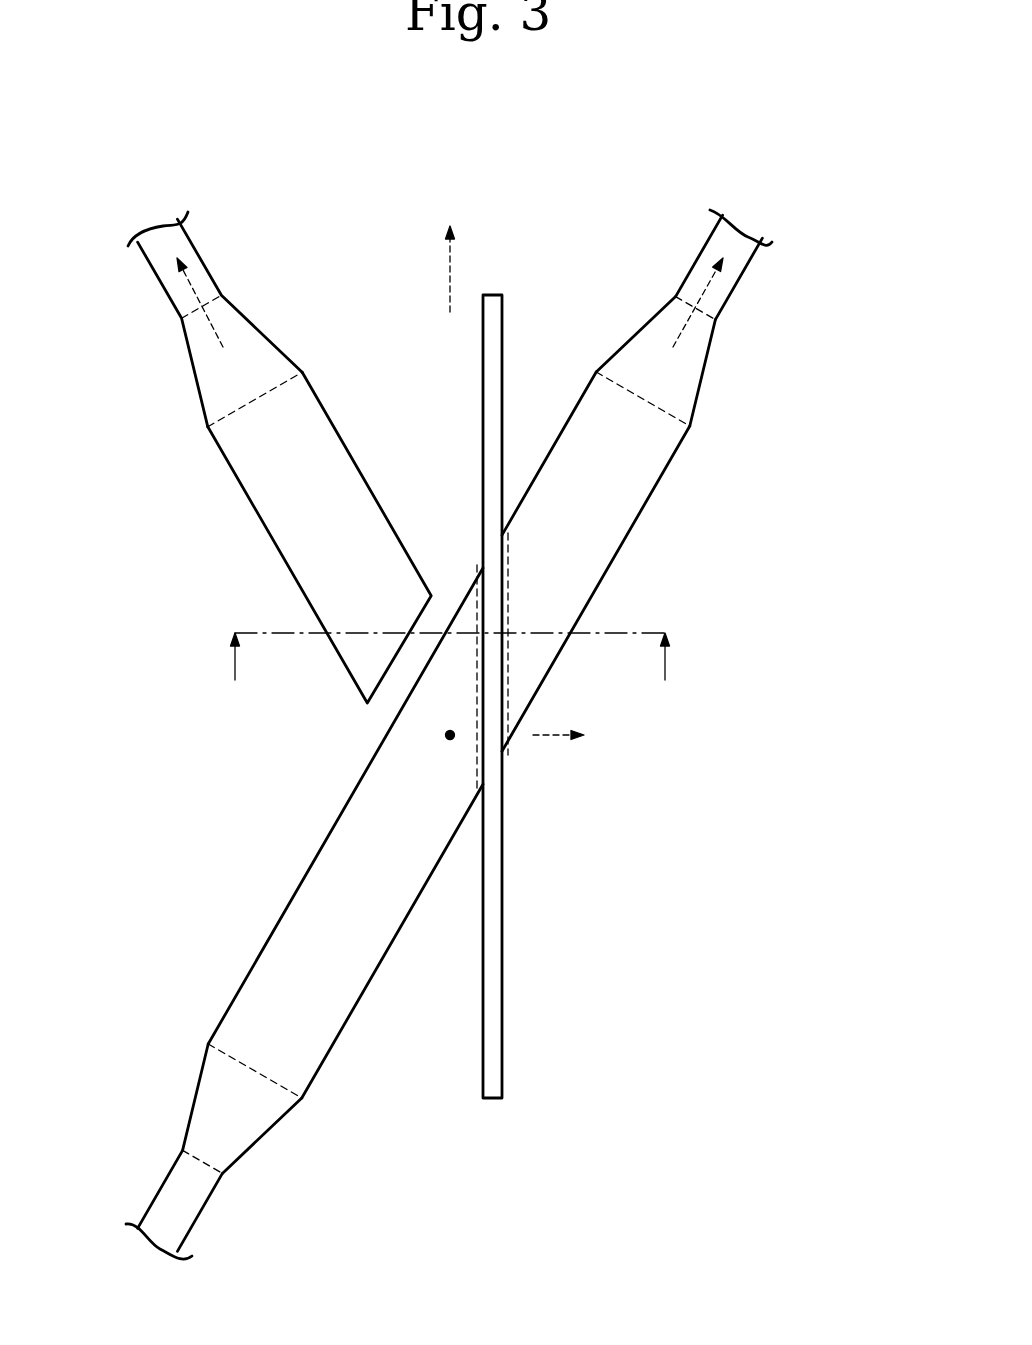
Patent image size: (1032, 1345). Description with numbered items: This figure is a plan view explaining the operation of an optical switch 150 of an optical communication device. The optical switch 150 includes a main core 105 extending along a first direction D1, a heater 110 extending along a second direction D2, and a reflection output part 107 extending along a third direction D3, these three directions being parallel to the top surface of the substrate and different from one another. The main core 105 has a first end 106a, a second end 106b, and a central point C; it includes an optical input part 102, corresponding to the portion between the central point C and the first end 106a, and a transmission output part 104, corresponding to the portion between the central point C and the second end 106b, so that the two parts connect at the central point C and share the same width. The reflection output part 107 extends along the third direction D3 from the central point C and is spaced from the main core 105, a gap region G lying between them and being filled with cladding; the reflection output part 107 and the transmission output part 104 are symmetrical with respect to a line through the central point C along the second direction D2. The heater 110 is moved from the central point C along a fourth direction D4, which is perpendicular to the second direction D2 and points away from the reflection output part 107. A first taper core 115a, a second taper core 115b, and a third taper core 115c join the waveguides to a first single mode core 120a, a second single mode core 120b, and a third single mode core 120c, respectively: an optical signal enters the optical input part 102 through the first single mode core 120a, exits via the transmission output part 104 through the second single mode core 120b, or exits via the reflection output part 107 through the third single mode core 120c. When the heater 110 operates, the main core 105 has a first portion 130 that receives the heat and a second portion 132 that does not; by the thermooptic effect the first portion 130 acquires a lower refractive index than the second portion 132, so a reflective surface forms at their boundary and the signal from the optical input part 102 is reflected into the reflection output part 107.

The optical switch 150 is at (858, 127).
The heater 110 is at (492, 295).
The main core 105 is at (718, 750).
The optical input part 102 is at (395, 940).
The transmission output part 104 is at (543, 690).
The first end 106a is at (233, 1058).
The second end 106b is at (622, 385).
The first taper core 115a is at (270, 1135).
The second taper core 115b is at (700, 392).
The third taper core 115c is at (262, 328).
The first single mode core 120a is at (202, 1217).
The second single mode core 120b is at (743, 285).
The third single mode core 120c is at (158, 283).
The reflection output part 107 is at (275, 543).
The first portion 130 is at (508, 575).
The second portion 132 is at (658, 453).
The first direction D1 is at (713, 328).
The second direction D2 is at (448, 268).
The third direction D3 is at (202, 328).
The fourth direction D4 is at (548, 740).
The central point C is at (450, 742).
The gap region G is at (388, 698).